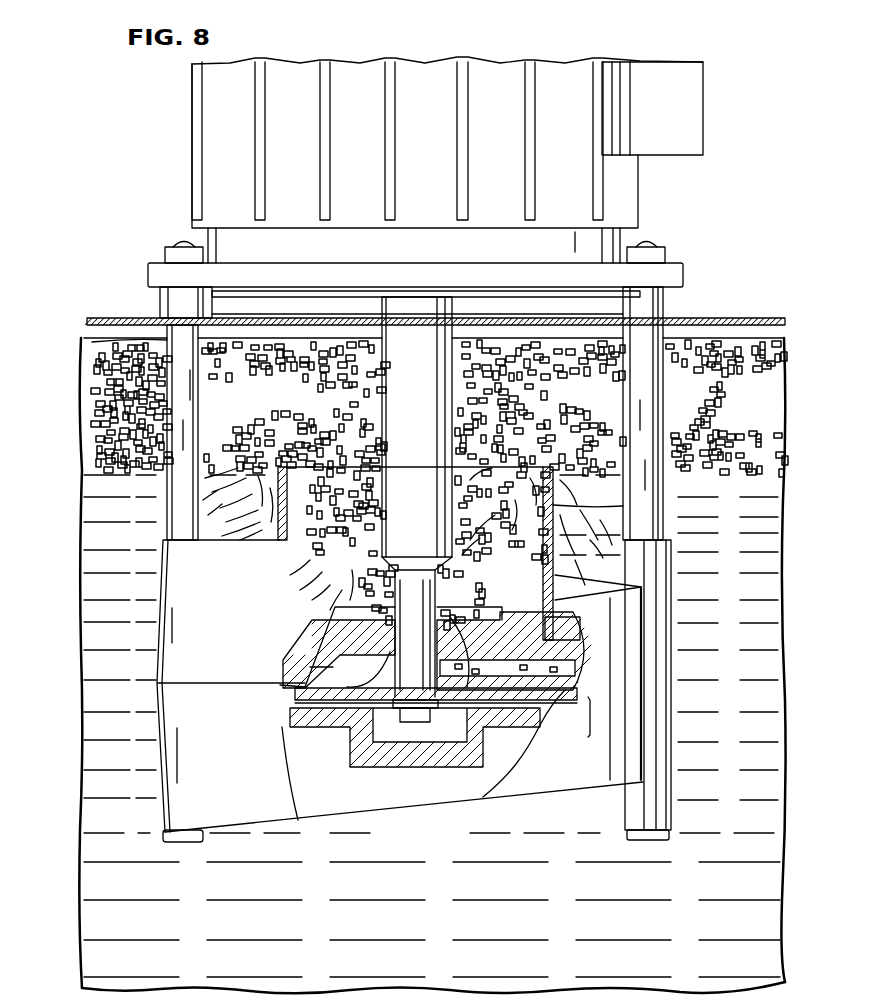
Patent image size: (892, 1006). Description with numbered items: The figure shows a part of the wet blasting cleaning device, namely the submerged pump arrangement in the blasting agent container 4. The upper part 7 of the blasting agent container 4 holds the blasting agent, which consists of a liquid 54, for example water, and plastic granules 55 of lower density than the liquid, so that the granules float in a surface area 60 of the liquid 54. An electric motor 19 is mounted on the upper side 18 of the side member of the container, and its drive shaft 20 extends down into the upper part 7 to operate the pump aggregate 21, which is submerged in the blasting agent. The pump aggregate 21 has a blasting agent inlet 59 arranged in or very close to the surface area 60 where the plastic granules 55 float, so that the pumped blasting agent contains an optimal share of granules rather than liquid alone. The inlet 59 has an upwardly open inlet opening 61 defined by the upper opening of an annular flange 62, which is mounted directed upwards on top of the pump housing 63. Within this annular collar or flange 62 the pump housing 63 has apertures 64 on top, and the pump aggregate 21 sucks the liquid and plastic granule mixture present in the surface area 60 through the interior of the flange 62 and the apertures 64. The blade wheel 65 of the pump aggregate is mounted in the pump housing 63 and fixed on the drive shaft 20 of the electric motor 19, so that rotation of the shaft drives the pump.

The blasting agent container 4 is at (125, 912).
The upper part 7 is at (79, 833).
The upper side 18 is at (730, 318).
The electric motor 19 is at (578, 117).
The drive shaft 20 is at (432, 383).
The pump aggregate 21 is at (692, 667).
The liquid 54 is at (100, 480).
The plastic granules 55 is at (95, 342).
The blasting agent inlet 59 is at (370, 455).
The surface area 60 is at (75, 345).
The inlet opening 61 is at (305, 447).
The annular flange 62 is at (663, 510).
The pump housing 63 is at (630, 637).
The apertures 64 is at (477, 633).
The blade wheel 65 is at (533, 683).